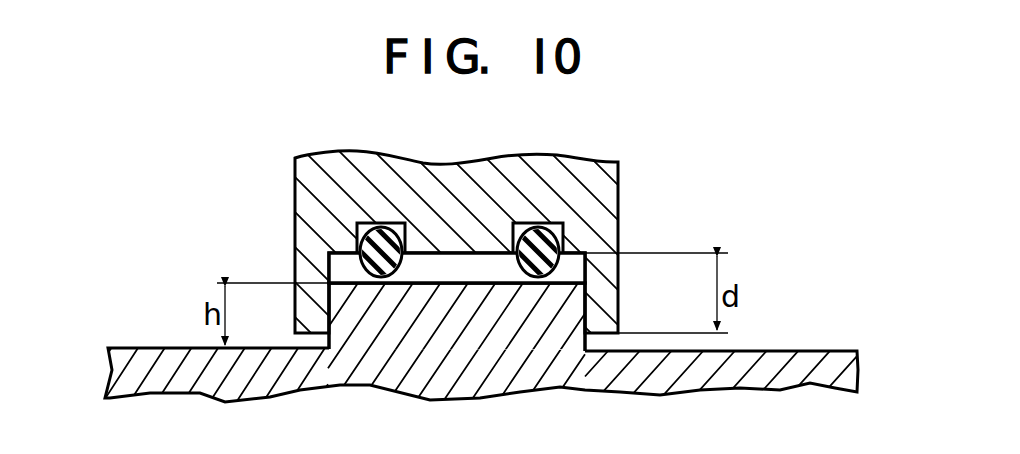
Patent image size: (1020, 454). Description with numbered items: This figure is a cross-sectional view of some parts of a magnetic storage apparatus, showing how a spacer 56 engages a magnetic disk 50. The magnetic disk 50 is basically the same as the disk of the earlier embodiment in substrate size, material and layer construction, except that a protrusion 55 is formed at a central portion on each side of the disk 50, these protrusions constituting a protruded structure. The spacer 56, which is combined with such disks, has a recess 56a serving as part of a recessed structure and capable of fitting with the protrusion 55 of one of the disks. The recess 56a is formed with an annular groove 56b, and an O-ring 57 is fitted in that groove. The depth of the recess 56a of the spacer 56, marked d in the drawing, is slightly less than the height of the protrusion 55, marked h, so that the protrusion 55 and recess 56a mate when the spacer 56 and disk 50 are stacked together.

The magnetic disk 50 is at (793, 349).
The protrusion 55 is at (385, 285).
The spacer 56 is at (623, 175).
The recess 56a is at (342, 262).
The annular groove 56b is at (407, 242).
The O-ring 57 is at (517, 272).